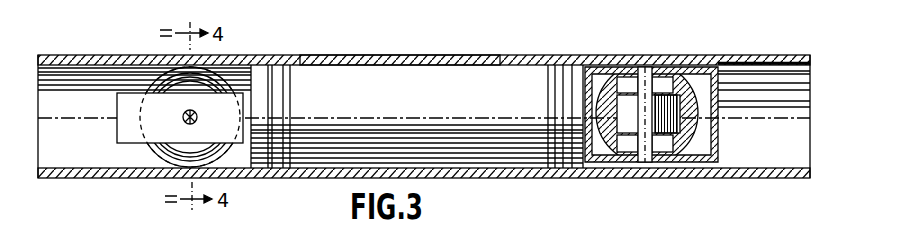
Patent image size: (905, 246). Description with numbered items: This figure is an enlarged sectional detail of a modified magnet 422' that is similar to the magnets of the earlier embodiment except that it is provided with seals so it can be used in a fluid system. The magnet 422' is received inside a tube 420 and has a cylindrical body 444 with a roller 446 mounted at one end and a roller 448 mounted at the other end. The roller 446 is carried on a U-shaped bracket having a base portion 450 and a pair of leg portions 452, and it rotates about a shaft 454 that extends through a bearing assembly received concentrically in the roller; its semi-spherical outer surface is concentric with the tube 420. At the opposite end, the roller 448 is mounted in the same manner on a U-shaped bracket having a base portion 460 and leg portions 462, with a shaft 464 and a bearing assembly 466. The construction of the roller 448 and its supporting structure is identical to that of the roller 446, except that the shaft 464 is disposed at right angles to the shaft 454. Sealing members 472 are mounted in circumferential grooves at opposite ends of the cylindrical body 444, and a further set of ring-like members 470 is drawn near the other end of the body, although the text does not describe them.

The tube 420 is at (662, 57).
The magnet 422' is at (400, 43).
The cylindrical body 444 is at (512, 158).
The roller 446 is at (167, 167).
The roller 448 is at (697, 125).
The base portion 450 is at (115, 113).
The leg portions 452 is at (117, 131).
The shaft 454 is at (188, 112).
The base portion 460 is at (718, 100).
The leg portions 462 is at (693, 70).
The shaft 464 is at (647, 157).
The bearing assembly 466 is at (634, 118).
The seal rings 470 is at (289, 62).
The sealing members 472 is at (567, 62).